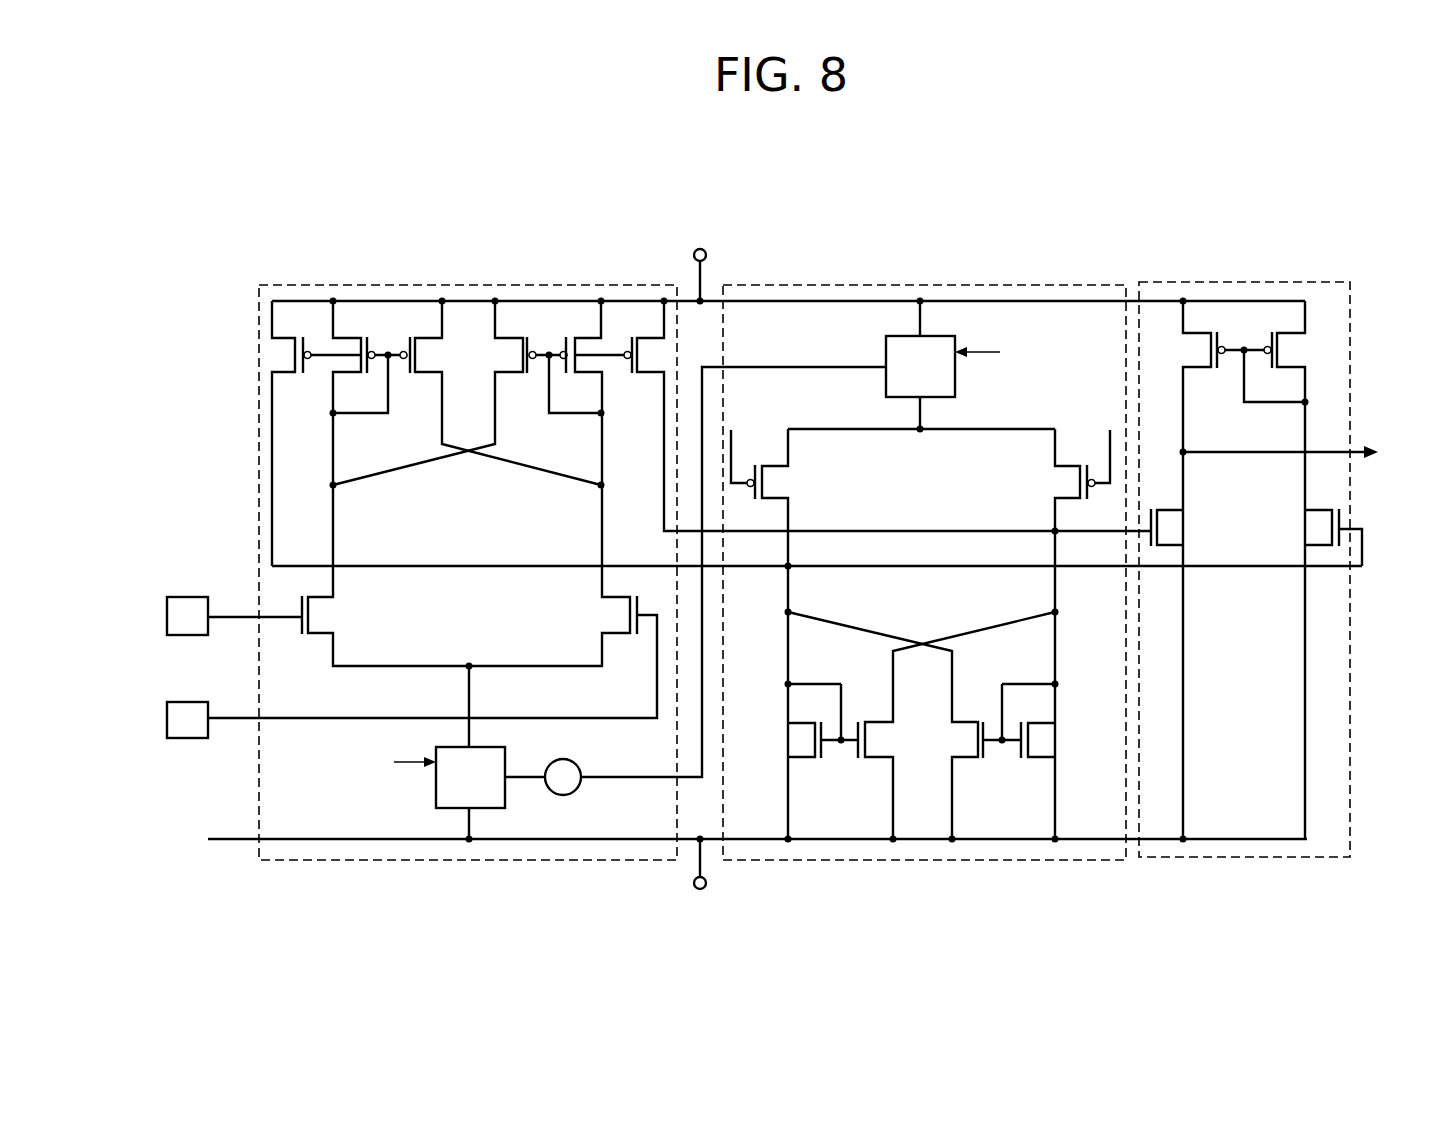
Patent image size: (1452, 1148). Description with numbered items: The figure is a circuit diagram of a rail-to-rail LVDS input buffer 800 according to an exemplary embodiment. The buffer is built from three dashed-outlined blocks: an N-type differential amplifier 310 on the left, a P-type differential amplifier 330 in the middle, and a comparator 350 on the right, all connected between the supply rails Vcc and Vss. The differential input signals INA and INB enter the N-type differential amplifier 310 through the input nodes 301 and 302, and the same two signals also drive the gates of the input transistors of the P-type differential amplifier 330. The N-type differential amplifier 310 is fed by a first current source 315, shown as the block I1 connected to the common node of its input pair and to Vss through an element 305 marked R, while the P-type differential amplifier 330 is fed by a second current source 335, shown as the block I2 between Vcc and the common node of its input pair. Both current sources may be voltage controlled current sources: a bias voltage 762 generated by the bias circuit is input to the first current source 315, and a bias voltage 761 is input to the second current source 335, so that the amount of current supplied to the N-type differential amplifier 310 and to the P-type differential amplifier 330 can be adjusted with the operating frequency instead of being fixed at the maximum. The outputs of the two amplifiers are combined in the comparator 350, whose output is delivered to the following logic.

The input buffer circuit 800 is at (794, 193).
The N-type differential amplifier 310 is at (630, 285).
The P-type differential amplifier 330 is at (920, 285).
The comparator 350 is at (1243, 282).
The first input terminal 301 is at (187, 597).
The second input terminal 302 is at (187, 702).
The resistor 305 is at (576, 790).
The first current source 315 is at (436, 790).
The second current source 335 is at (955, 380).
The bias voltage 761 is at (999, 352).
The bias voltage 762 is at (393, 762).